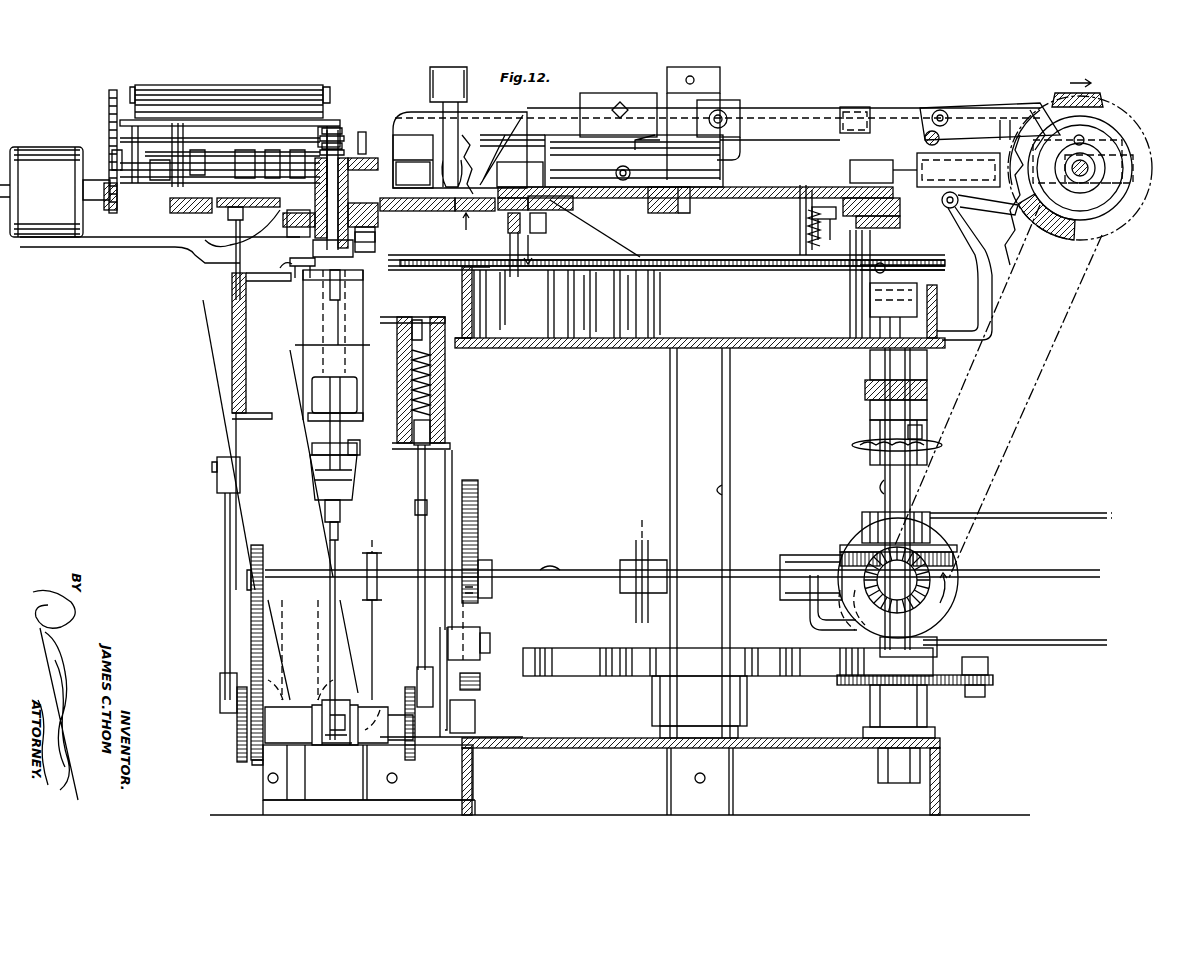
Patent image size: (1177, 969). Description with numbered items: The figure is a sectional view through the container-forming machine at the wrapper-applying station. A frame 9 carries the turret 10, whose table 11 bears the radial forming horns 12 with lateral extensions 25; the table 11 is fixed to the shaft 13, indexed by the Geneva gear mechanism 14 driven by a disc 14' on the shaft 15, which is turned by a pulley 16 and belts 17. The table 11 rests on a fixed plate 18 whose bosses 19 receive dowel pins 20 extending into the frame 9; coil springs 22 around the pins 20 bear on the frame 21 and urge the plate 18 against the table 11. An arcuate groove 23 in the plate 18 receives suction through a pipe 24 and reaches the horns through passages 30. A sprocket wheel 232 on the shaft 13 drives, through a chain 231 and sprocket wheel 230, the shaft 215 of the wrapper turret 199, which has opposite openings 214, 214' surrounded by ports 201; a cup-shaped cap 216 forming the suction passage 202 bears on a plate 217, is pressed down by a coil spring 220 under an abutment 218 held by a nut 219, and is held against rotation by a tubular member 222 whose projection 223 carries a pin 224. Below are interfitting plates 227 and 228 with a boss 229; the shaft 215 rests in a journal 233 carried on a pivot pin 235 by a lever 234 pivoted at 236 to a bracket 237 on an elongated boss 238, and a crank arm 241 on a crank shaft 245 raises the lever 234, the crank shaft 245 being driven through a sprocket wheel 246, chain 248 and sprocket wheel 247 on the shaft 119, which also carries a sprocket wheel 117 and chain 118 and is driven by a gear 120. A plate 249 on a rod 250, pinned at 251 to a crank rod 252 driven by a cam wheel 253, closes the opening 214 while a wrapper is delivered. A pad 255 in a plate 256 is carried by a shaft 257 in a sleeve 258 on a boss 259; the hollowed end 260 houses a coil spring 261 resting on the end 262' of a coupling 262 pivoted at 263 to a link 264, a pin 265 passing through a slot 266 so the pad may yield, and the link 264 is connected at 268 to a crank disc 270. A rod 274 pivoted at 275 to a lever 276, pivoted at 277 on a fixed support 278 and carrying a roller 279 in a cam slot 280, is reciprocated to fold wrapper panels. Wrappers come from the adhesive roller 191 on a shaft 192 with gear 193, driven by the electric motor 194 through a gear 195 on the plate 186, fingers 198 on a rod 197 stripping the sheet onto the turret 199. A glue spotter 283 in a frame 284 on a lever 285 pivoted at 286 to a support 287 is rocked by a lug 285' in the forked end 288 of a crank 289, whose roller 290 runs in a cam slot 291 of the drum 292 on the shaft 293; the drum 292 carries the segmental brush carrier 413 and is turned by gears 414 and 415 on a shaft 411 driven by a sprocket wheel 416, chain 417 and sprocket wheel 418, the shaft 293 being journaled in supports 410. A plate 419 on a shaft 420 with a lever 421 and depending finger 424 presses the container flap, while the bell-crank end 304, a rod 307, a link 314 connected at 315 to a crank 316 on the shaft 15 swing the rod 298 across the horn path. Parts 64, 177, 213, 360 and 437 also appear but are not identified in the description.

The frame 9 is at (607, 348).
The turret 10 is at (778, 198).
The table 11 is at (720, 190).
The forming horn 12 is at (486, 172).
The shaft 13 is at (730, 380).
The Geneva gear mechanism 14 is at (728, 675).
The disc 14' is at (931, 697).
The shaft 15 is at (912, 492).
The pulley 16 is at (957, 562).
The belts 17 is at (1052, 639).
The support plate 18 is at (900, 201).
The depending bosses 19 is at (838, 220).
The dowel pins 20 is at (522, 276).
The frame 21 is at (614, 270).
The coil springs 22 is at (530, 247).
The arcuate groove 23 is at (560, 204).
The pipe 24 is at (546, 224).
The lateral extensions 25 is at (860, 165).
The passages 30 is at (870, 220).
The cam lever 64 is at (470, 125).
The sprocket wheel 117 is at (403, 613).
The chain 118 is at (395, 510).
The shaft 119 is at (586, 570).
The gear 120 is at (922, 590).
The sprocket 177 is at (368, 572).
The plate 186 is at (120, 248).
The roller 191 is at (218, 152).
The shaft 192 is at (110, 150).
The gear 193 is at (113, 93).
The electric motor 194 is at (55, 192).
The gear 195 is at (115, 214).
The rod 197 is at (195, 130).
The fingers 198 is at (250, 130).
The wrapper turret 199 is at (172, 210).
The ports 201 is at (202, 212).
The suction passage 202 is at (288, 228).
The sprocket 213 is at (635, 605).
The opening 214 is at (223, 253).
The opening 214' is at (480, 222).
The shaft 215 is at (310, 248).
The cap 216 is at (398, 147).
The washer plate 217 is at (398, 161).
The abutment 218 is at (340, 128).
The nut 219 is at (325, 127).
The coil spring 220 is at (350, 148).
The tubular member 222 is at (315, 183).
The lateral projection 223 is at (365, 130).
The pin 224 is at (358, 130).
The plate 227 is at (365, 237).
The plate 228 is at (333, 345).
The boss 229 is at (293, 262).
The sprocket wheel 230 is at (298, 270).
The sprocket chain 231 is at (752, 252).
The sprocket wheel 232 is at (628, 248).
The journal 233 is at (348, 453).
The lever 234 is at (352, 488).
The pivot pin 235 is at (310, 478).
The pivot 236 is at (312, 461).
The bracket 237 is at (335, 400).
The elongated boss 238 is at (312, 368).
The crank arm 241 is at (332, 536).
The crank shaft 245 is at (325, 745).
The sprocket wheel 246 is at (255, 762).
The sprocket wheel 247 is at (250, 572).
The chain 248 is at (250, 638).
The plate 249 is at (215, 263).
The rod 250 is at (236, 427).
The pin 251 is at (215, 460).
The crank rod 252 is at (225, 513).
The cam wheel 253 is at (237, 728).
The pad 255 is at (420, 198).
The plate 256 is at (456, 220).
The shaft 257 is at (450, 340).
The sleeve 258 is at (446, 381).
The boss 259 is at (450, 410).
The hollowed end 260 is at (400, 340).
The coil spring 261 is at (446, 396).
The coupling 262 is at (372, 453).
The coupling end 262' is at (456, 432).
The pivot 263 is at (357, 475).
The link 264 is at (440, 491).
The pin 265 is at (345, 310).
The slot 266 is at (350, 278).
The connection 268 is at (410, 678).
The crank disc 270 is at (415, 760).
The rod 274 is at (440, 520).
The pivot 275 is at (465, 718).
The lever 276 is at (480, 684).
The pivot 277 is at (490, 643).
The fixed support 278 is at (470, 700).
The roller 279 is at (473, 636).
The cam slot 280 is at (475, 537).
The glue spotter 283 is at (450, 100).
The frame 284 is at (498, 112).
The lever 285 is at (717, 113).
The lug 285' is at (849, 89).
The pivot 286 is at (730, 80).
The support 287 is at (739, 148).
The forked end 288 is at (870, 110).
The crank 289 is at (968, 108).
The roller 290 is at (1065, 83).
The cam slot 291 is at (1085, 120).
The drum 292 is at (1095, 150).
The shaft 293 is at (1090, 120).
The rod 298 is at (580, 137).
The bell crank end 304 is at (638, 157).
The rod 307 is at (697, 118).
The link 314 is at (937, 270).
The connection 315 is at (870, 285).
The crank 316 is at (850, 310).
The sprocket 360 is at (648, 610).
The supports 410 is at (972, 337).
The shaft 411 is at (1058, 215).
The segmental brush carrier 413 is at (1108, 240).
The gear 414 is at (1040, 160).
The gear 415 is at (980, 205).
The sprocket wheel 416 is at (977, 375).
The chain 417 is at (1076, 310).
The sprocket wheel 418 is at (932, 572).
The plate 419 is at (945, 130).
The shaft 420 is at (940, 108).
The lever 421 is at (1035, 108).
The depending finger 424 is at (1003, 118).
The collar 437 is at (927, 440).